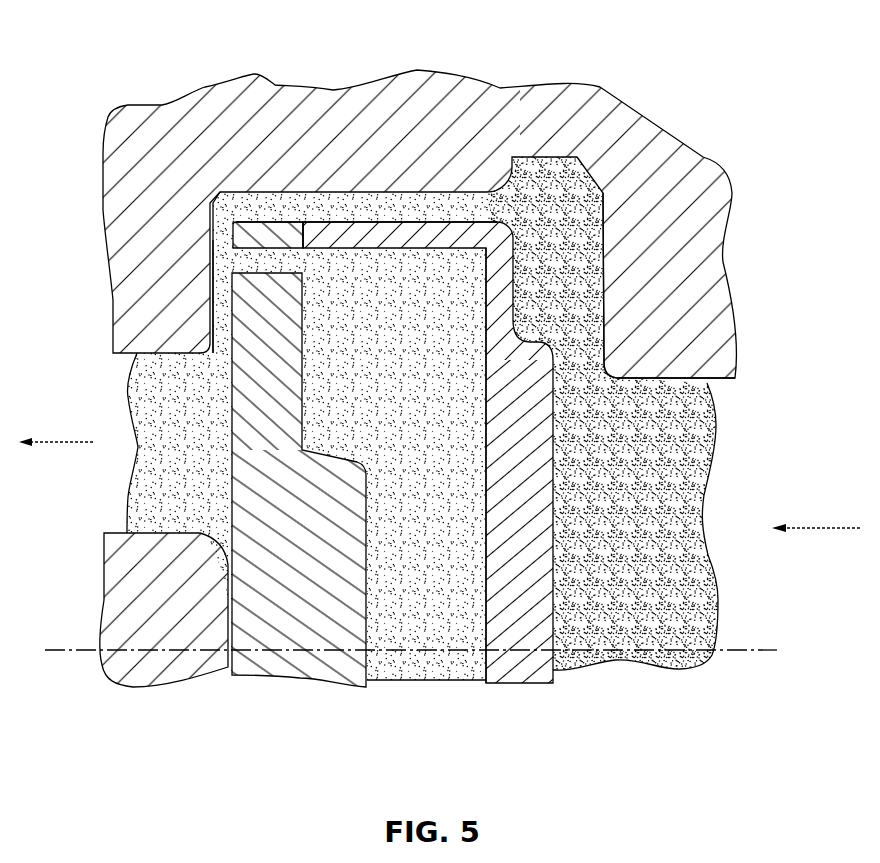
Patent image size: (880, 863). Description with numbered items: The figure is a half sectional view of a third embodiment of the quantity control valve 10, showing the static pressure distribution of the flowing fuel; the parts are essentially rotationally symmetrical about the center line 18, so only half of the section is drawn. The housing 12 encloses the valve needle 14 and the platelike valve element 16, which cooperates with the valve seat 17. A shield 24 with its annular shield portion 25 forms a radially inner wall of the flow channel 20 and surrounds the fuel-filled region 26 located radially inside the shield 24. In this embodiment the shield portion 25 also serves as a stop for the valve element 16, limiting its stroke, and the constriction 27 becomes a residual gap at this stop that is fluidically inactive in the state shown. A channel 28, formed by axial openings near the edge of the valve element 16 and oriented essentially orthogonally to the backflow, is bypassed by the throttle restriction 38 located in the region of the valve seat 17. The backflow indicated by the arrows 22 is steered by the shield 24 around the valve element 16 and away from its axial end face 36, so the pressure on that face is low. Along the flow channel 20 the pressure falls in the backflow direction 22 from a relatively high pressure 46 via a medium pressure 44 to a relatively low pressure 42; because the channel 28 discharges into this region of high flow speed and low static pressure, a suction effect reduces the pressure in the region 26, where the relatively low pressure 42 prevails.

The quantity control valve 10 is at (709, 67).
The housing 12 is at (390, 137).
The valve needle 14 is at (163, 605).
The valve element 16 is at (243, 237).
The valve seat 17 is at (198, 319).
The center line 18 is at (758, 653).
The flow channel 20 is at (612, 299).
The backflow direction 22 is at (63, 440).
The shield 24 is at (562, 533).
The shield portion 25 is at (422, 237).
The region 26 is at (430, 413).
The constriction 27 is at (298, 205).
The channel 28 is at (270, 228).
The axial end face 36 is at (405, 548).
The throttle restriction 38 is at (198, 253).
The relatively low pressure 42 is at (177, 477).
The medium pressure 44 is at (572, 234).
The relatively high pressure 46 is at (643, 425).